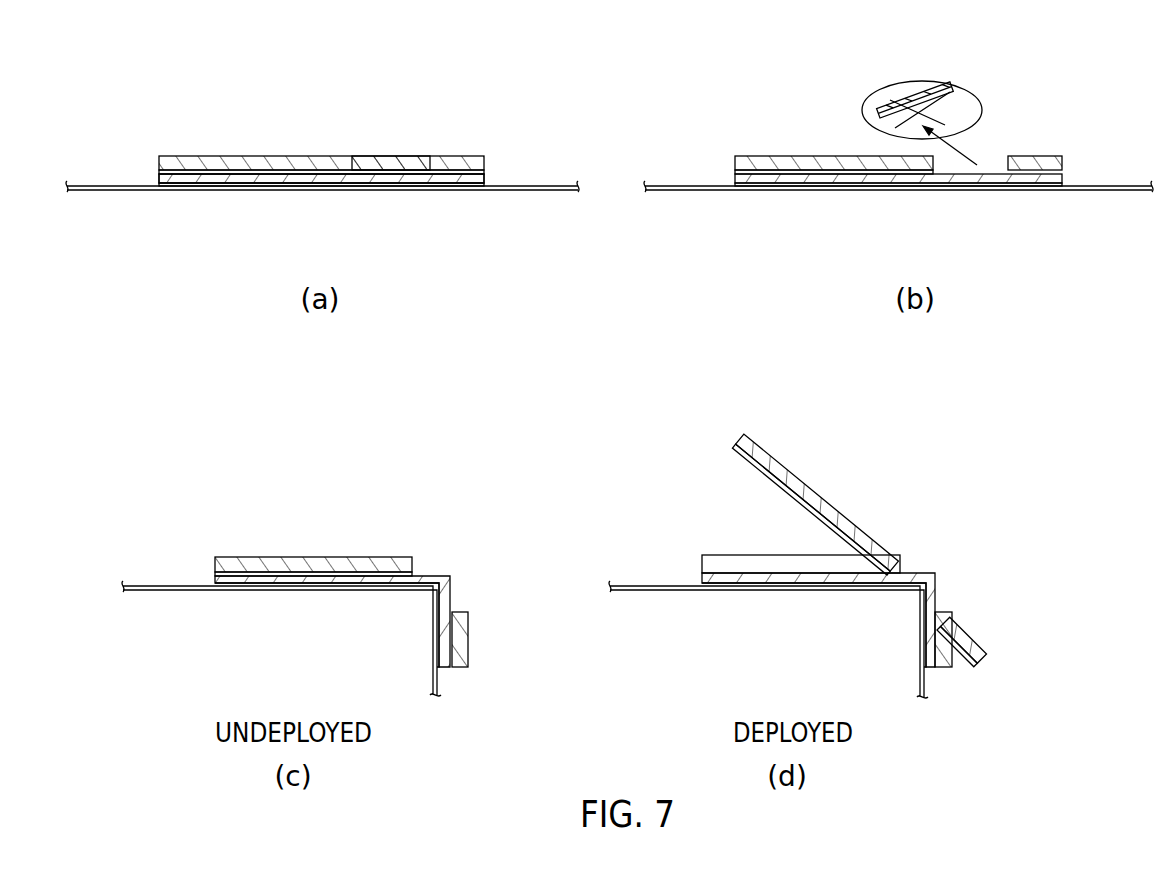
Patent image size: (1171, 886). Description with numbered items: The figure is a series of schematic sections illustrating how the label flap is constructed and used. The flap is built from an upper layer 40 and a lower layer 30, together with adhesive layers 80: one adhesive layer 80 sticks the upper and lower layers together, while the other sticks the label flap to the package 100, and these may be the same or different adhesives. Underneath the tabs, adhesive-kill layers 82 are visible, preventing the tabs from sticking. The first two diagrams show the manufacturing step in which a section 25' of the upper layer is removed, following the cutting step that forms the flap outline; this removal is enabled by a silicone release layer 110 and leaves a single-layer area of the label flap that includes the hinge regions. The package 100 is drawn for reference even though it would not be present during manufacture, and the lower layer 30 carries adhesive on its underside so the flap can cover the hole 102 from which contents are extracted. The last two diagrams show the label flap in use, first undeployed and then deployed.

The section of upper layer 25' is at (922, 97).
The lower layer 30 is at (487, 178).
The upper layer 40 is at (470, 163).
The adhesive layer 80 is at (246, 172).
The adhesive-kill layer 82 is at (188, 187).
The package 100 is at (118, 190).
The hole 102 is at (260, 186).
The silicone release layer 110 is at (378, 170).